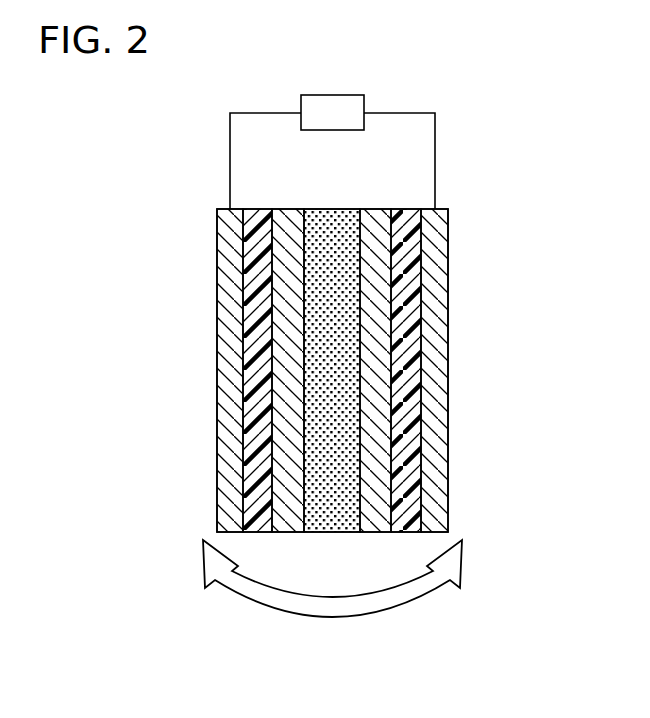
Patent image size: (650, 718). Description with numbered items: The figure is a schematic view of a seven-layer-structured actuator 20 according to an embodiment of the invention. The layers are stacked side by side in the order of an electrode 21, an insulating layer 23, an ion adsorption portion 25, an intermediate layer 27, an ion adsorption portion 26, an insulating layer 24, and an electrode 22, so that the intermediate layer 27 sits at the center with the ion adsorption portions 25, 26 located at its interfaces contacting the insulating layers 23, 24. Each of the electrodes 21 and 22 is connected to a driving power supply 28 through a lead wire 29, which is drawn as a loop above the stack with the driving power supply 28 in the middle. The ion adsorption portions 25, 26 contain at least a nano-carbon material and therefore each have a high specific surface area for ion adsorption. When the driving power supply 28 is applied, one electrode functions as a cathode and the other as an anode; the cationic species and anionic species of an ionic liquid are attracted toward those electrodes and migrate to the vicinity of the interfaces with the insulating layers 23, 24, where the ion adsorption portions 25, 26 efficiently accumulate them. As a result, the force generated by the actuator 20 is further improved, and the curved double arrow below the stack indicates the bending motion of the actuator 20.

The actuator 20 is at (439, 64).
The electrode 21 is at (230, 257).
The electrode 22 is at (435, 260).
The insulating layer 23 is at (257, 330).
The insulating layer 24 is at (407, 330).
The ion adsorption portion 25 is at (293, 410).
The ion adsorption portion 26 is at (373, 410).
The intermediate layer 27 is at (327, 490).
The driving power supply 28 is at (333, 95).
The lead wire 29 is at (436, 145).